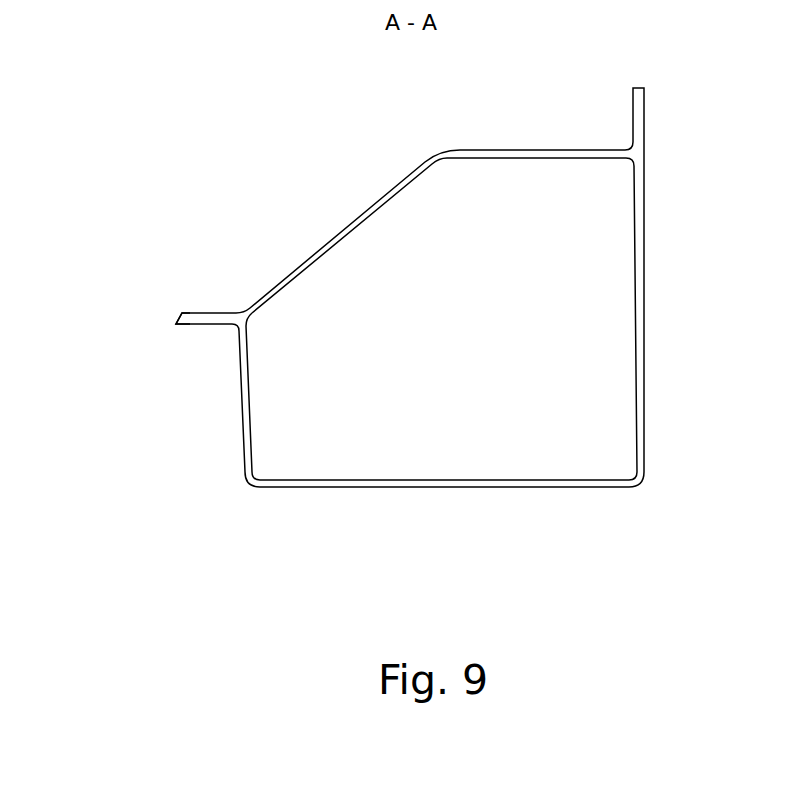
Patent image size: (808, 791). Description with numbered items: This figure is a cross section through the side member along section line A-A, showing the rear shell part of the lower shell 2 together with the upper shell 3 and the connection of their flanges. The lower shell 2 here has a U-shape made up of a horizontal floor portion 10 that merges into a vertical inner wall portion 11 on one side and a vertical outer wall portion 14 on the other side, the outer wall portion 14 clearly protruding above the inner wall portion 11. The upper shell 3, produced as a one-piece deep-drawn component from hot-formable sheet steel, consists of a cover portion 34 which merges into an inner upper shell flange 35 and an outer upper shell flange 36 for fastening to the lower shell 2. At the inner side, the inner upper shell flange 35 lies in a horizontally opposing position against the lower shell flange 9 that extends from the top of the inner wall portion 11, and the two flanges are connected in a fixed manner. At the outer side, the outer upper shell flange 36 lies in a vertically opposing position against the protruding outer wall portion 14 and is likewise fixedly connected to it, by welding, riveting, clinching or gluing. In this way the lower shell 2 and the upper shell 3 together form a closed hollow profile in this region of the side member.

The lower shell 2 is at (450, 371).
The upper shell 3 is at (431, 221).
The lower shell flange 9 is at (185, 328).
The horizontal floor portion 10 is at (388, 487).
The vertical inner wall portion 11 is at (243, 445).
The vertical outer wall portion 14 is at (645, 302).
The cover portion 34 is at (345, 224).
The inner upper shell flange 35 is at (179, 321).
The outer upper shell flange 36 is at (632, 110).